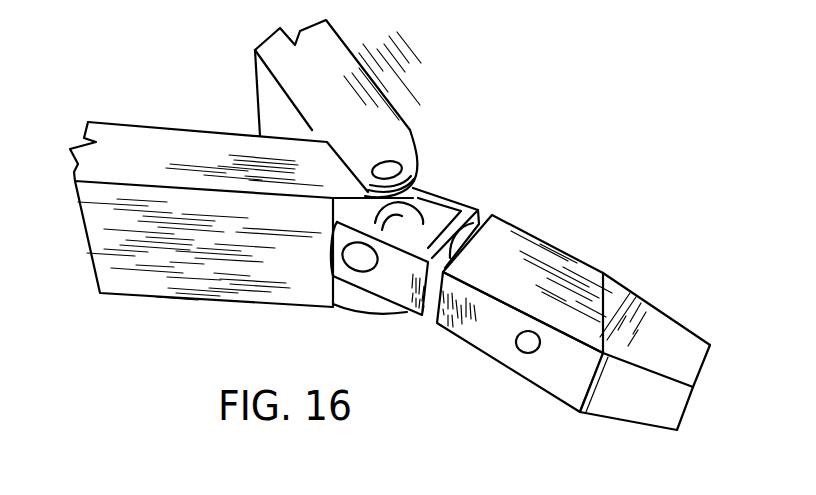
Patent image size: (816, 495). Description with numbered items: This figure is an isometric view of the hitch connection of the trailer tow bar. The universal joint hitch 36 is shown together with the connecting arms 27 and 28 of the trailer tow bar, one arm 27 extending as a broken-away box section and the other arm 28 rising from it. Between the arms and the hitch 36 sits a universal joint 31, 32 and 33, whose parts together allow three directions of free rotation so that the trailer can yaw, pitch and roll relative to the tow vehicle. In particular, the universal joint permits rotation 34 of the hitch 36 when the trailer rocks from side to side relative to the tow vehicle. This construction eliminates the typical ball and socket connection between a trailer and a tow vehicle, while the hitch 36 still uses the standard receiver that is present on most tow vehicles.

The connecting arm 27 is at (93, 270).
The connecting arm 28 is at (265, 76).
The universal joint 31 is at (402, 167).
The universal joint 32 is at (420, 213).
The universal joint 33 is at (413, 312).
The rotation 34 is at (502, 223).
The hitch 36 is at (607, 275).